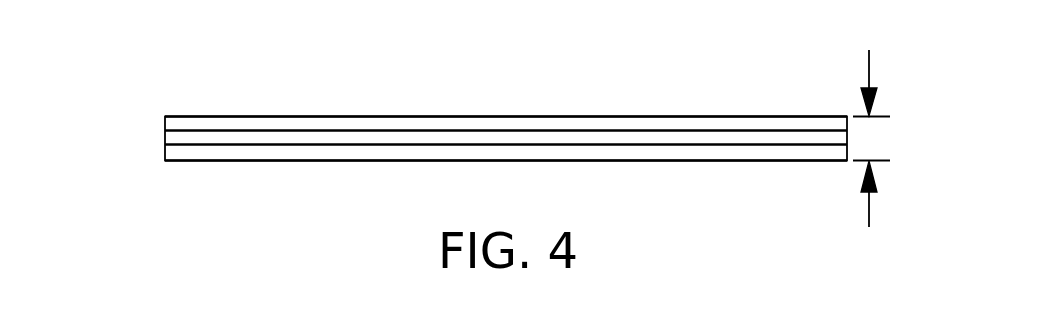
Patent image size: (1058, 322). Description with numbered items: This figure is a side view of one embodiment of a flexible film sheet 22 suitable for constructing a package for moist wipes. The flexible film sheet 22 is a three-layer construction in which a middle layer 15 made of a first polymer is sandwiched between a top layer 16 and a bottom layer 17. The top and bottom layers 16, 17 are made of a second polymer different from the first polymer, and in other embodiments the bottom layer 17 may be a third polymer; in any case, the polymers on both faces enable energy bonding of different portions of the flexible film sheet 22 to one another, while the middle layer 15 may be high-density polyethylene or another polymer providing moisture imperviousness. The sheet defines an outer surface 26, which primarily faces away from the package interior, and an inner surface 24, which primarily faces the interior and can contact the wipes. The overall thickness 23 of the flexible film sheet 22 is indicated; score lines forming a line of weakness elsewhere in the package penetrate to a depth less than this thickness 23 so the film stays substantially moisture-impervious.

The flexible film sheet 22 is at (332, 87).
The top layer 16 is at (165, 122).
The middle layer 15 is at (165, 138).
The bottom layer 17 is at (165, 150).
The outer surface 26 is at (545, 116).
The inner surface 24 is at (625, 161).
The thickness 23 is at (869, 65).